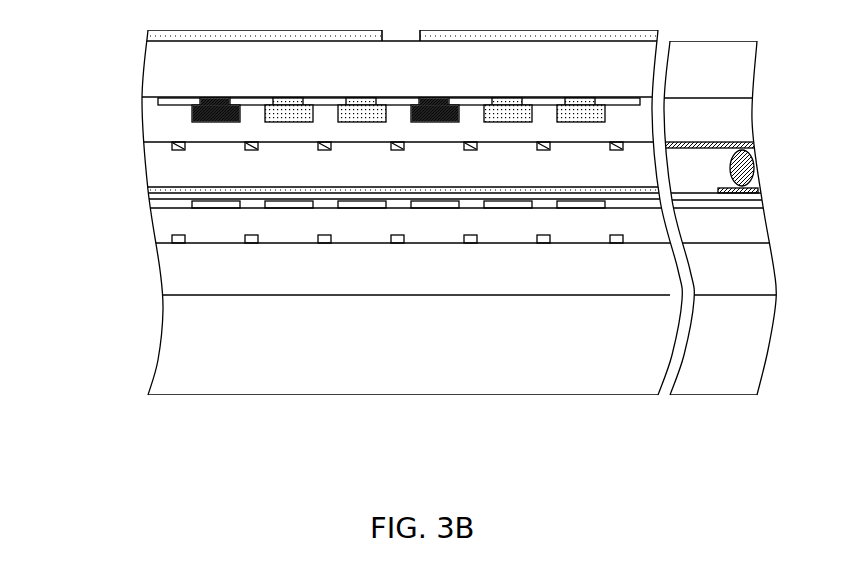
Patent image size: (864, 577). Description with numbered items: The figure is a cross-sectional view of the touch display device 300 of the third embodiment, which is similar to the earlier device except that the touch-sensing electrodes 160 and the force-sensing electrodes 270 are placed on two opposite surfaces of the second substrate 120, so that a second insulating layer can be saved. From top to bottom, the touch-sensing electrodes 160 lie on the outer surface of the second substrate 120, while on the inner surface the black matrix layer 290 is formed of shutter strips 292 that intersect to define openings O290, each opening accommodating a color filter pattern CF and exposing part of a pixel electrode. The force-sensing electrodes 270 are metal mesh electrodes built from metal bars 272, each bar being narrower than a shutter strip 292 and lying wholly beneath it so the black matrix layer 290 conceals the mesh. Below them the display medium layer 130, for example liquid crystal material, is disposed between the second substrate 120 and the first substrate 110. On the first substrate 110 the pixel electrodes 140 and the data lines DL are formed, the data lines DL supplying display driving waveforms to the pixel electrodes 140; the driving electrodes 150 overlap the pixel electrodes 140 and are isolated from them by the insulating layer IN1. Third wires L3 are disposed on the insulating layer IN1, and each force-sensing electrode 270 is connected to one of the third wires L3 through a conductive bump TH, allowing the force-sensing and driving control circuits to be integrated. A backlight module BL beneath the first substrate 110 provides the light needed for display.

The touch display device 300 is at (425, 240).
The touch-sensing electrodes 160 is at (152, 33).
The second substrate 120 is at (152, 73).
The black matrix layer 290 is at (411, 118).
The shutter strips 292 is at (158, 103).
The openings O290 is at (192, 122).
The color filter pattern CF is at (600, 112).
The metal bars 272 is at (170, 145).
The force-sensing electrodes 270 is at (754, 146).
The conductive bumps TH is at (758, 168).
The display medium layer 130 is at (157, 173).
The third wires L3 is at (764, 191).
The driving electrodes 150 is at (163, 200).
The insulating layer IN1 is at (156, 210).
The pixel electrodes 140 is at (188, 204).
The data lines DL is at (183, 278).
The first substrate 110 is at (182, 243).
The backlight module BL is at (168, 348).